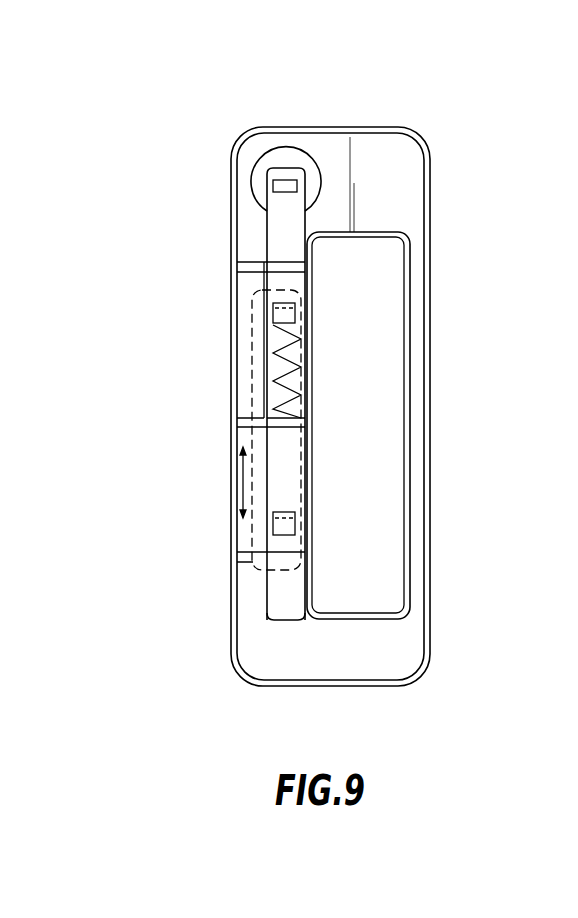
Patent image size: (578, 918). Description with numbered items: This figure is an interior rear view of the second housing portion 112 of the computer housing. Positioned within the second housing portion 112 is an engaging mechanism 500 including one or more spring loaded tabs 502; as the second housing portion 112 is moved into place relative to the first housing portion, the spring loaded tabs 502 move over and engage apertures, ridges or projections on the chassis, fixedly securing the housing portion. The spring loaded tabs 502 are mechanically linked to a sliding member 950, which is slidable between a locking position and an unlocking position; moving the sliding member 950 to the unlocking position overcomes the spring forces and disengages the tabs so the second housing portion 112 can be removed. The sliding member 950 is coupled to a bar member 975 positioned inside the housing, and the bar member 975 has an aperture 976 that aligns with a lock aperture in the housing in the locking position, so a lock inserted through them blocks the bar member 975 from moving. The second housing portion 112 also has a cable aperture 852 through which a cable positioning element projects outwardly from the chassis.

The second housing portion 112 is at (430, 631).
The cable aperture 852 is at (383, 423).
The bar member 975 is at (307, 220).
The bar member aperture 976 is at (285, 179).
The engaging mechanism 500 is at (233, 353).
The spring loaded tab 502 is at (272, 316).
The sliding member 950 is at (232, 409).